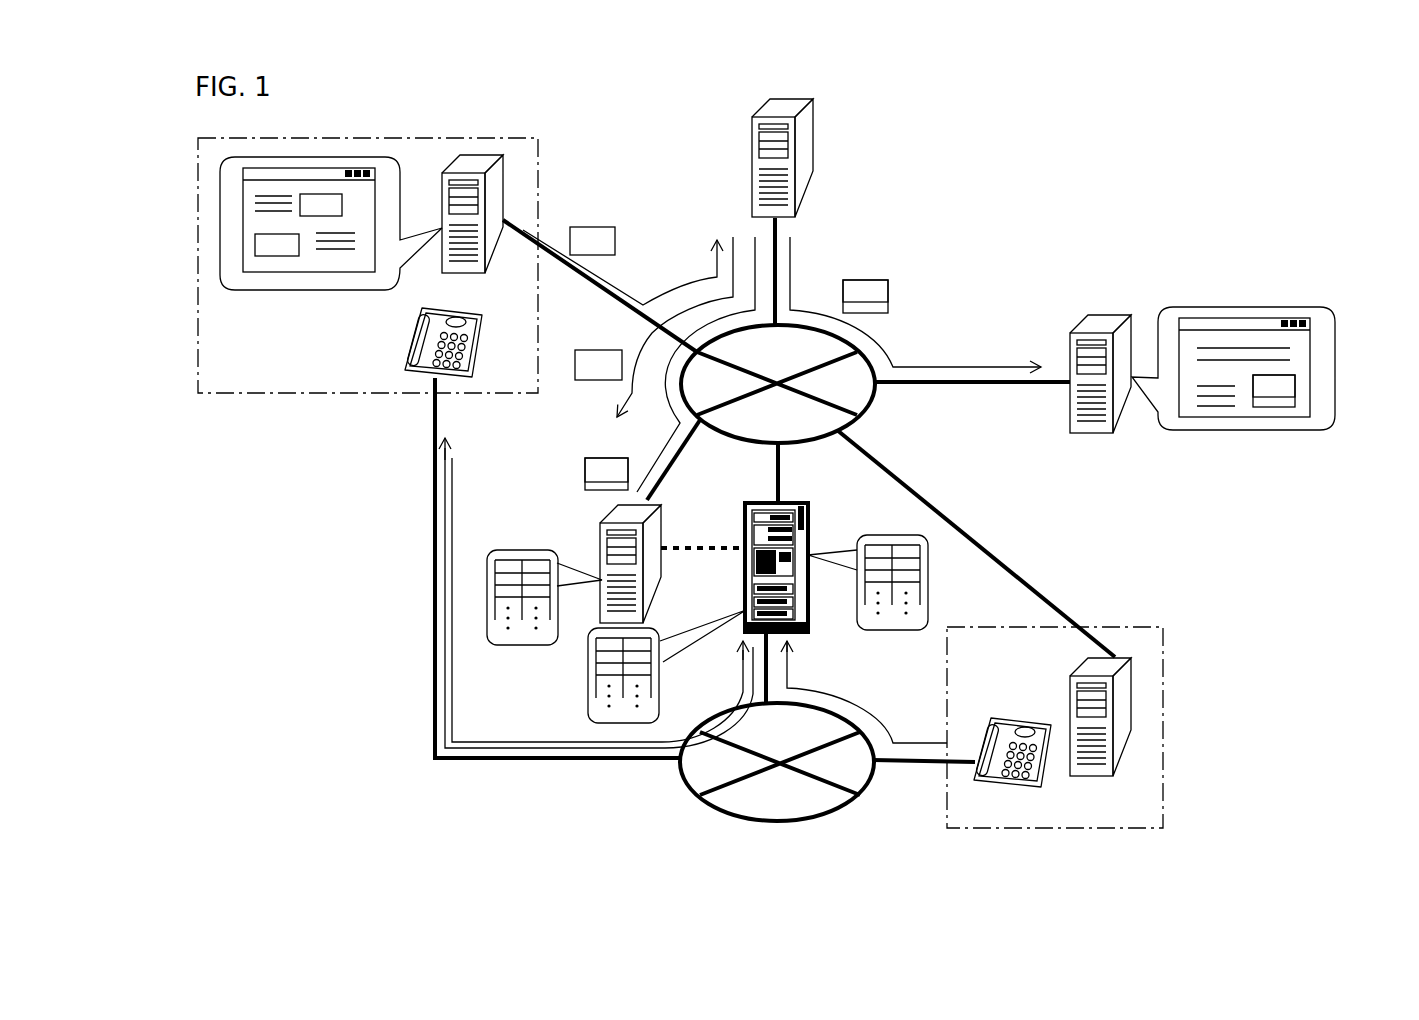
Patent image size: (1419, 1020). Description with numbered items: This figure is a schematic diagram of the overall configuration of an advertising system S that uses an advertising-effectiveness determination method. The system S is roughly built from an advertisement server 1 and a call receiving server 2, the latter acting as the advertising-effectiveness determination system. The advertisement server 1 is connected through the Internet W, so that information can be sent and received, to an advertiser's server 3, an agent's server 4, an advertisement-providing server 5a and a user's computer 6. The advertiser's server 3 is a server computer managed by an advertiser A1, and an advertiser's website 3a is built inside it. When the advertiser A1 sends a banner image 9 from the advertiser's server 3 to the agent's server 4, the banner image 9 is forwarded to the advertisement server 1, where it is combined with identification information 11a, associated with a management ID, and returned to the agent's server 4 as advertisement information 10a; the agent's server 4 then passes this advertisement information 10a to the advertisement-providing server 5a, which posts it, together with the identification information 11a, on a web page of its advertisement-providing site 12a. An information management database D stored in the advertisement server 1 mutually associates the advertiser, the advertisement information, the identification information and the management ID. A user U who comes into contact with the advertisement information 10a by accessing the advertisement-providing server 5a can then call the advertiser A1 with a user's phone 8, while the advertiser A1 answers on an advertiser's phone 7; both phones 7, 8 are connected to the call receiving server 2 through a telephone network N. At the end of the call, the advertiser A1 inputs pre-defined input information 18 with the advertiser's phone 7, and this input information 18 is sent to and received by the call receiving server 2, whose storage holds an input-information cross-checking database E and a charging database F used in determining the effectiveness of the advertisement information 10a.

The advertisement server 1 is at (600, 525).
The call receiving server 2 is at (810, 533).
The advertiser's server 3 is at (503, 172).
The advertiser's website 3a is at (243, 228).
The agent's server 4 is at (813, 148).
The advertisement-providing server 5a is at (1112, 317).
The user's computer 6 is at (1131, 672).
The advertiser's phone 7 is at (404, 354).
The user's phone 8 is at (1030, 795).
The banner image 9 is at (590, 227).
The advertisement information 10a is at (873, 280).
The identification information 11a is at (1297, 402).
The advertisement-providing site 12a is at (1312, 340).
The input information 18 is at (452, 728).
The advertiser A1 is at (333, 138).
The user U is at (1165, 777).
The advertising system S is at (909, 122).
The Internet W is at (860, 413).
The telephone network N is at (817, 818).
The information management database D is at (508, 560).
The input-information cross-checking database E is at (915, 615).
The charging database F is at (592, 680).